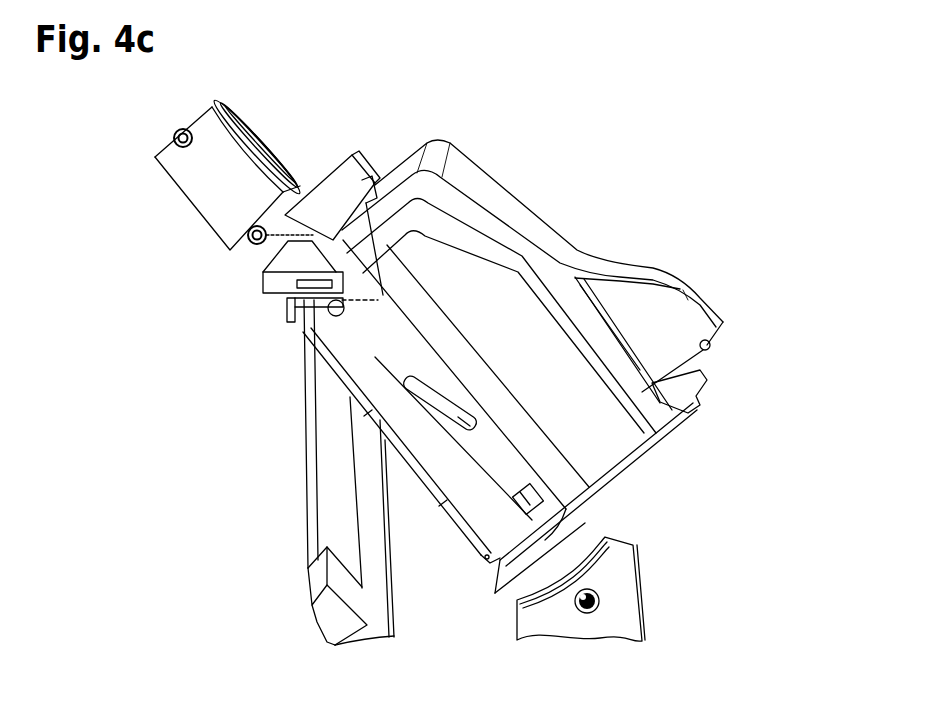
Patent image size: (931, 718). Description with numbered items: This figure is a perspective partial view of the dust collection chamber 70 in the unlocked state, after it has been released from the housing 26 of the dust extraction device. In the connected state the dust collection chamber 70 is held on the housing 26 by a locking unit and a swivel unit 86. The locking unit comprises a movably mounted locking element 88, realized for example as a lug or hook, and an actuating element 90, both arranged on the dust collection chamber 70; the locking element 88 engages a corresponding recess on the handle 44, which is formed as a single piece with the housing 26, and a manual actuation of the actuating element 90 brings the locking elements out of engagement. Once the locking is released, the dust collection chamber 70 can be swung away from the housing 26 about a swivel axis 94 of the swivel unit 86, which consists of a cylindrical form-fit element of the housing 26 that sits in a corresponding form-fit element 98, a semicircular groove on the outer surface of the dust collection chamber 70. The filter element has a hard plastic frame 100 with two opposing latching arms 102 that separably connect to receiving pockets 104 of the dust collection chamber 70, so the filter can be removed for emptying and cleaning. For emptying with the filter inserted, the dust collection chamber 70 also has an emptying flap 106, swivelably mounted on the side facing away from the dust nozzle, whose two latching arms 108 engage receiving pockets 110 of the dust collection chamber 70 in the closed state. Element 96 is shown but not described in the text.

The dust collection chamber 70 is at (496, 143).
The form-fit element 98 is at (355, 312).
The actuating element 90 is at (703, 303).
The locking element 88 is at (709, 350).
The swivel unit 86 is at (215, 284).
The swivel axis 94 is at (295, 327).
The strip 96 is at (345, 320).
The receiving pockets 104 is at (418, 428).
The housing 26 is at (340, 525).
The plastic frame 100 is at (445, 503).
The receiving pockets 110 is at (540, 567).
The latching arms 102 is at (455, 415).
The emptying flap 106 is at (550, 528).
The latching arms 108 is at (635, 525).
The handle 44 is at (685, 630).